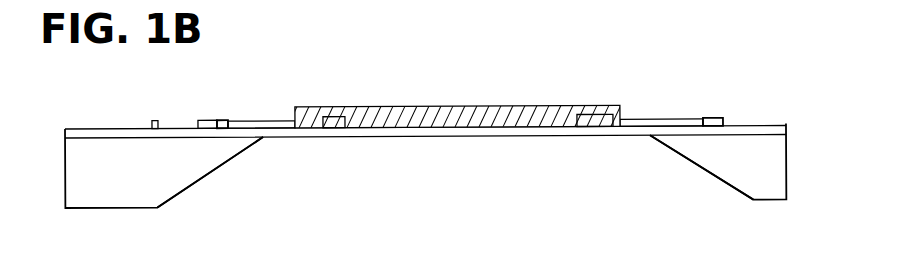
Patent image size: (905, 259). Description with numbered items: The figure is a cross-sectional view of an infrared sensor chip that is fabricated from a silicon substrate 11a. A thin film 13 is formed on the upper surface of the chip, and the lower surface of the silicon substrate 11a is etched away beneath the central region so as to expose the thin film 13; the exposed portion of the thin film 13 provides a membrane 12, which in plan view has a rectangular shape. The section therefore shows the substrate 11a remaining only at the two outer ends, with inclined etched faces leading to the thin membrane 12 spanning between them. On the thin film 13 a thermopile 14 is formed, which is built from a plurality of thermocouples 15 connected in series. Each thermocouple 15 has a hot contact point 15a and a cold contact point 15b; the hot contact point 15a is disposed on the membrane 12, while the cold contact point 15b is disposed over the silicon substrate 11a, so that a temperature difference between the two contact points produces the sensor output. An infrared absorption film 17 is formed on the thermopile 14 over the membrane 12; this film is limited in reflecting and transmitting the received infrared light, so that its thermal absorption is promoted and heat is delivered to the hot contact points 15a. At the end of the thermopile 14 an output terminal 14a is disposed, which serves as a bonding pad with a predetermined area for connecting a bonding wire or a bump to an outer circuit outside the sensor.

The silicon substrate 11a is at (735, 180).
The membrane 12 is at (593, 108).
The thin film 13 is at (767, 124).
The thermopile 14 is at (265, 115).
The output terminal 14a is at (152, 120).
The thermocouple 15 is at (225, 120).
The hot contact point 15a is at (333, 119).
The cold contact point 15b is at (197, 121).
The infrared absorption film 17 is at (483, 110).